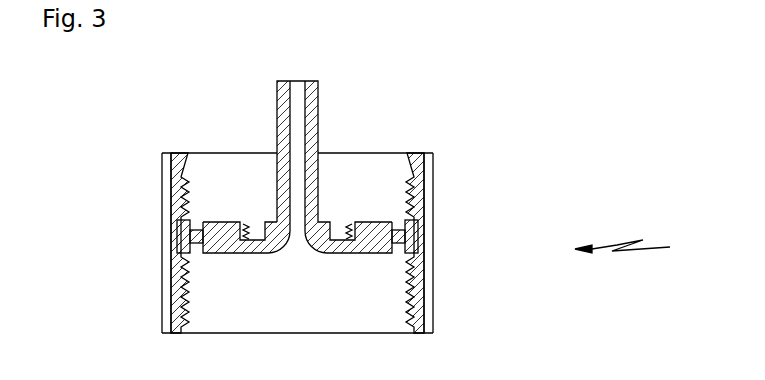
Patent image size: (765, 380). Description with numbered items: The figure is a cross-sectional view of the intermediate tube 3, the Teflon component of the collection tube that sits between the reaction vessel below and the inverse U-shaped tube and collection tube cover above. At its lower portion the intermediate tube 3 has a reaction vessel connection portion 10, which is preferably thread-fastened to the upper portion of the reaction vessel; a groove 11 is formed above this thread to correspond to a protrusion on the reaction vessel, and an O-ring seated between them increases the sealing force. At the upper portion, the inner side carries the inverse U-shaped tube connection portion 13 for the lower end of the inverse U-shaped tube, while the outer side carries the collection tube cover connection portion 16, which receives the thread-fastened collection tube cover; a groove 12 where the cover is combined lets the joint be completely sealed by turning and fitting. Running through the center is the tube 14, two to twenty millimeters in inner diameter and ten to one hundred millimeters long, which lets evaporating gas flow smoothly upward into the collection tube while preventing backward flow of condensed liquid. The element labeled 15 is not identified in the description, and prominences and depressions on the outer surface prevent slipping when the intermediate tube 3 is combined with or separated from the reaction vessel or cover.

The intermediate tube 3 is at (631, 250).
The reaction vessel connection portion 10 is at (420, 292).
The groove 11 is at (408, 245).
The groove 12 is at (177, 227).
The inverse U-shaped tube connection portion 13 is at (245, 230).
The tube 14 is at (298, 80).
The outer casing 15 is at (163, 280).
The collection tube cover connection portion 16 is at (415, 183).